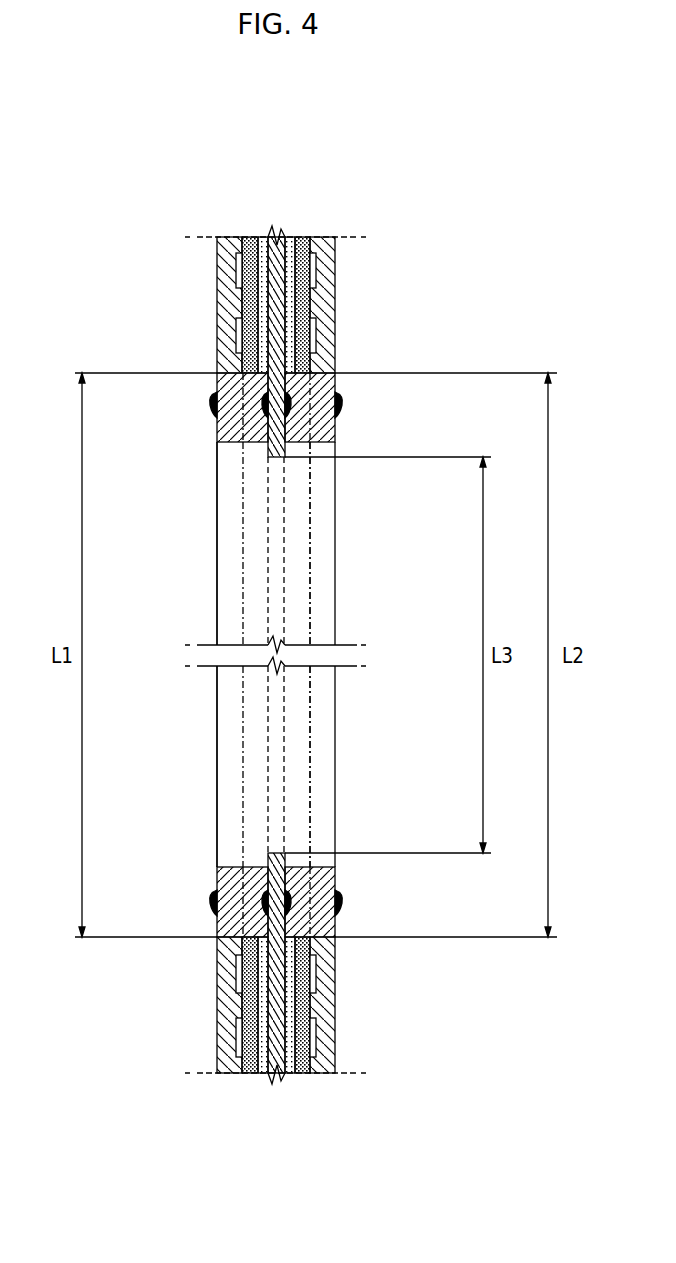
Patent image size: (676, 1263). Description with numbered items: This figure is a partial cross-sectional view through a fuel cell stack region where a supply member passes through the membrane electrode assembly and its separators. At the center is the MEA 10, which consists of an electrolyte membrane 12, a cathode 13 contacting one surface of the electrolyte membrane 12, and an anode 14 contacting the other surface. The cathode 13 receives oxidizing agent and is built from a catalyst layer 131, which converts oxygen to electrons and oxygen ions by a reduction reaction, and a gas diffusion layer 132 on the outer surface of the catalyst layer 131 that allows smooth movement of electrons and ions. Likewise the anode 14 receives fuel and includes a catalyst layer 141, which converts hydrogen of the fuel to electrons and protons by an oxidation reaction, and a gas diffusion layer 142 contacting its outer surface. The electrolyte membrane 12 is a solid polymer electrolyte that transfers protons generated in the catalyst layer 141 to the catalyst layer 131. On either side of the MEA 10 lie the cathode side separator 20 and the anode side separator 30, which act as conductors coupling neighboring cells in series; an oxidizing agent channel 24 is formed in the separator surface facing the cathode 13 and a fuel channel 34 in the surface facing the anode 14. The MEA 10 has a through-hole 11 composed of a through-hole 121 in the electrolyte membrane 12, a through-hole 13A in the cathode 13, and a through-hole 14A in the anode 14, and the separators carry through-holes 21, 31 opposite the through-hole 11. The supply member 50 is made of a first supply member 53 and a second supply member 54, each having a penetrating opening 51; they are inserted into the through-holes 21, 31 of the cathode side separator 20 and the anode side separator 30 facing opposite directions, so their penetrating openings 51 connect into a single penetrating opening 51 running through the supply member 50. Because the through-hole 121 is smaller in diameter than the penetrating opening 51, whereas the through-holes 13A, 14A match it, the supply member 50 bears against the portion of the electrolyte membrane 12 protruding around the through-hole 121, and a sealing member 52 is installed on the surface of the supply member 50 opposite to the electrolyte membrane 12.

The MEA 10 is at (218, 129).
The through-hole 11 is at (415, 490).
The electrolyte membrane 12 is at (276, 232).
The through-hole 121 is at (281, 507).
The cathode 13 is at (193, 171).
The catalyst layer 131 is at (262, 237).
The gas diffusion layer 132 is at (250, 237).
The through-hole 13A is at (261, 594).
The anode 14 is at (295, 171).
The catalyst layer 141 is at (291, 237).
The gas diffusion layer 142 is at (302, 237).
The through-hole 14A is at (300, 562).
The cathode side separator 20 is at (217, 316).
The through-hole 21 is at (233, 758).
The oxidizing agent channel 24 is at (240, 270).
The anode side separator 30 is at (335, 307).
The through-hole 31 is at (319, 758).
The fuel channel 34 is at (314, 270).
The supply member 50 is at (228, 427).
The penetrating opening 51 is at (217, 596).
The sealing member 52 is at (212, 402).
The first supply member 53 is at (222, 888).
The second supply member 54 is at (330, 888).